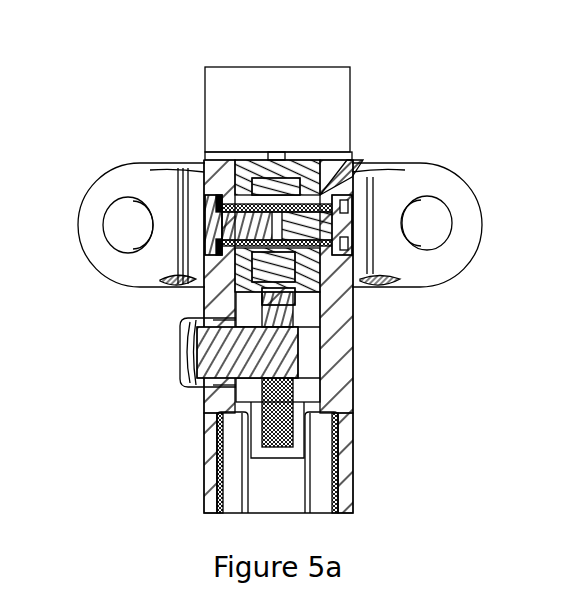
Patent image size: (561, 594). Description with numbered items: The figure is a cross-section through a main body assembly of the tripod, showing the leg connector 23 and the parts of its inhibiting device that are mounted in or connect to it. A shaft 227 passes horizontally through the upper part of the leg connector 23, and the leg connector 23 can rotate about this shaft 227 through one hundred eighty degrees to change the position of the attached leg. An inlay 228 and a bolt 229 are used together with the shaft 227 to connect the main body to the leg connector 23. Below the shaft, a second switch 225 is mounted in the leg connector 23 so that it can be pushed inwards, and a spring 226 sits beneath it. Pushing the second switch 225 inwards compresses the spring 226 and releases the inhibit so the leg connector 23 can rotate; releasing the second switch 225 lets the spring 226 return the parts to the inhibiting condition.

The leg connector 23 is at (212, 470).
The second switch 225 is at (197, 355).
The spring 226 is at (256, 428).
The shaft 227 is at (337, 170).
The inlay 228 is at (348, 195).
The bolt 229 is at (217, 227).